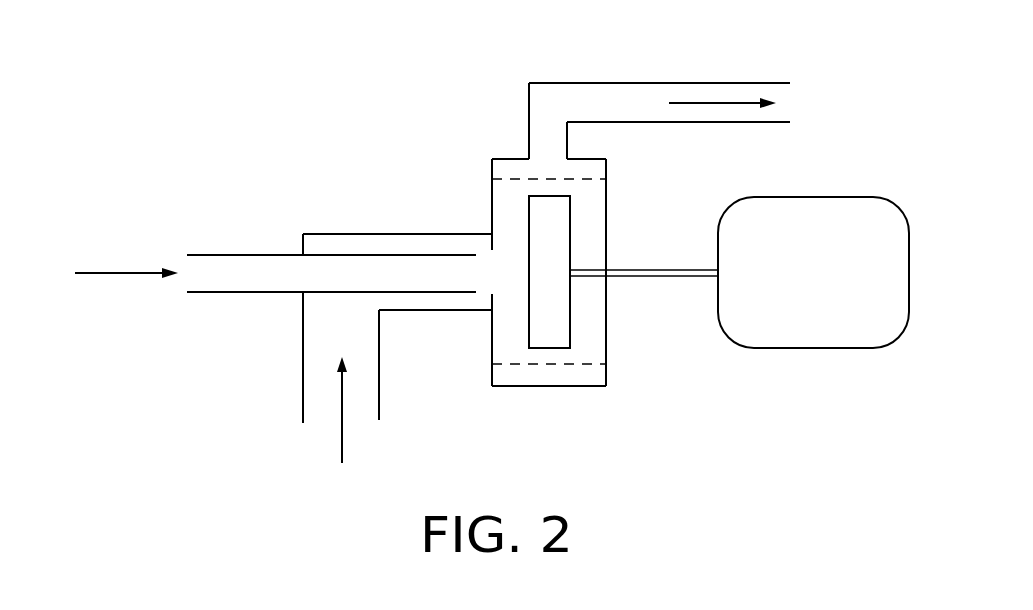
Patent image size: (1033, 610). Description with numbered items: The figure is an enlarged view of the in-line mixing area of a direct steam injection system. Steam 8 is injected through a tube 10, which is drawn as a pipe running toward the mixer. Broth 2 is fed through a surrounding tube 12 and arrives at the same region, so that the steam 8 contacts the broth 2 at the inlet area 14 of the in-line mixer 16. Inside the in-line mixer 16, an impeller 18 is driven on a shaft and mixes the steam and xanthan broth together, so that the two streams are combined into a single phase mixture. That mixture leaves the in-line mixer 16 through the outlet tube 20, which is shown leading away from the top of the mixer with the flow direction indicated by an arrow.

The broth 2 is at (352, 499).
The steam 8 is at (63, 288).
The tube 10 is at (247, 243).
The tube 12 is at (290, 376).
The inlet area 14 is at (474, 242).
The in-line mixer 16 is at (872, 364).
The impeller 18 is at (584, 313).
The outlet tube 20 is at (778, 72).